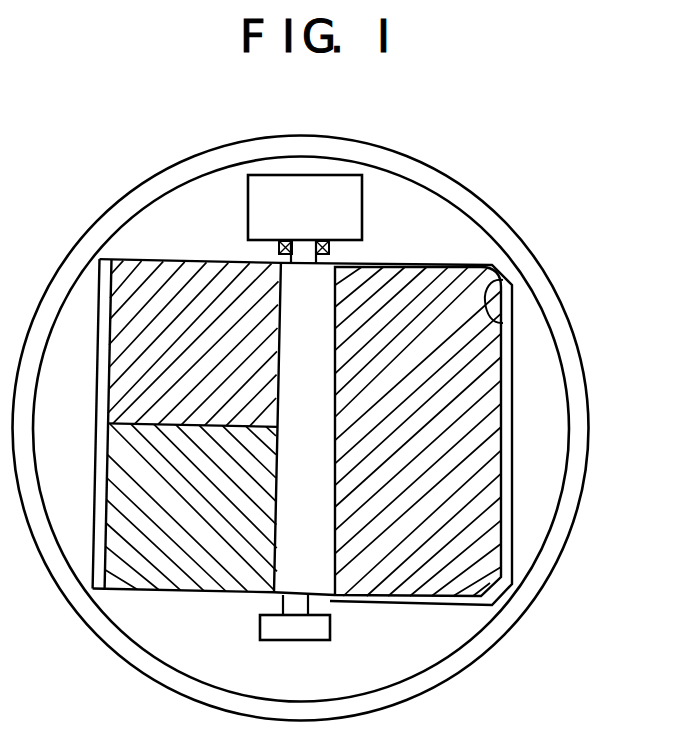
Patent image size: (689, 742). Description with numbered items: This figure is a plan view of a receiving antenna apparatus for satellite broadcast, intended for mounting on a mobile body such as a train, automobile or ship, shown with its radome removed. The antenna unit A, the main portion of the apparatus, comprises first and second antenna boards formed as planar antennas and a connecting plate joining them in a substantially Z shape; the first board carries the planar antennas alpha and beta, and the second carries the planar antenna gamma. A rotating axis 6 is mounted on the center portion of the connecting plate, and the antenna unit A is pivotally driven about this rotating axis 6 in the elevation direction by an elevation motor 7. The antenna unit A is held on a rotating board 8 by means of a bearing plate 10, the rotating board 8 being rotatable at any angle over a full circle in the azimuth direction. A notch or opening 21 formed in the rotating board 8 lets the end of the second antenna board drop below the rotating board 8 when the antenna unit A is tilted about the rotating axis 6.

The rotating axis 6 is at (312, 261).
The elevation motor 7 is at (345, 176).
The rotating board 8 is at (563, 383).
The bearing plate 10 is at (332, 634).
The notch or opening 21 is at (507, 281).
The antenna unit A is at (505, 507).